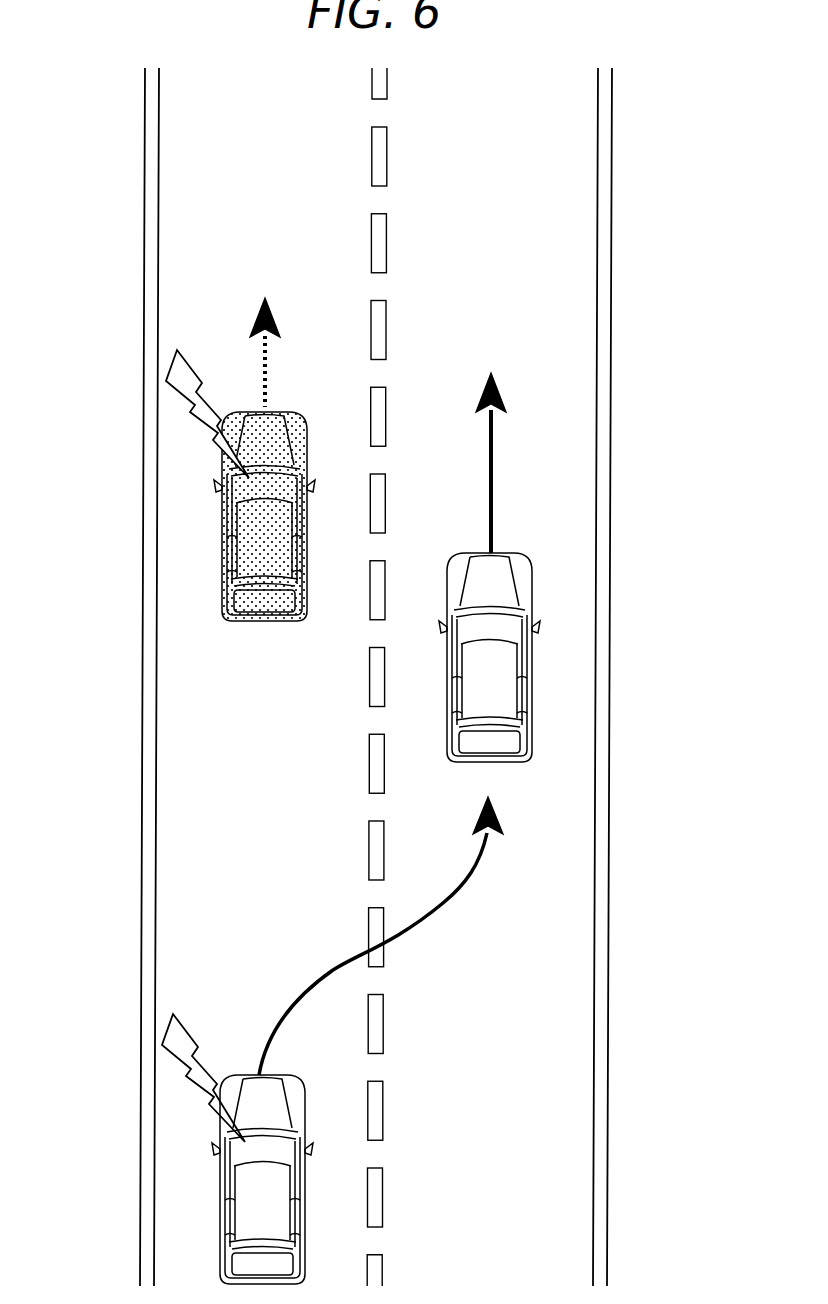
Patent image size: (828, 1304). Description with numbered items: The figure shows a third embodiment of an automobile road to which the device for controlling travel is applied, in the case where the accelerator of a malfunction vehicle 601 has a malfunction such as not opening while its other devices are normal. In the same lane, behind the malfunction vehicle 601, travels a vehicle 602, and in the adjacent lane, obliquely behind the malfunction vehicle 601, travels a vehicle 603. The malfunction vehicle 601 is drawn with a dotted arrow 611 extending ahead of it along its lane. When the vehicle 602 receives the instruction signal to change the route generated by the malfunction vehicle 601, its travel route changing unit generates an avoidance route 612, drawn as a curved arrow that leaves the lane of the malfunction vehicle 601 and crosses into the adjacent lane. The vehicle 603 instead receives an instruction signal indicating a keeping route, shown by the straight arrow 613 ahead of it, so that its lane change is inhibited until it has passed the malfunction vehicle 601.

The malfunction vehicle 601 is at (291, 416).
The vehicle 602 is at (297, 1077).
The vehicle 603 is at (518, 553).
The planned trajectory of first vehicle 611 is at (258, 362).
The avoidance route 612 is at (443, 905).
The trajectory of third vehicle 613 is at (495, 445).